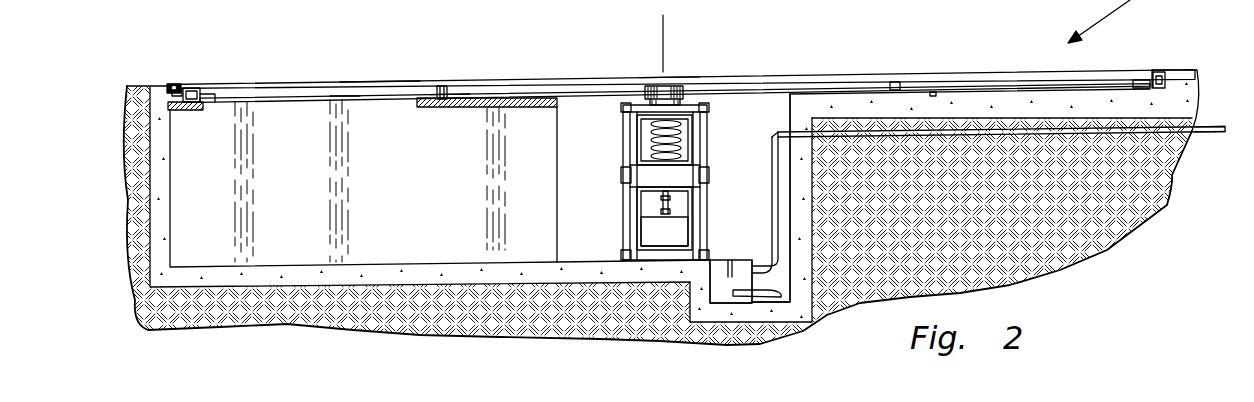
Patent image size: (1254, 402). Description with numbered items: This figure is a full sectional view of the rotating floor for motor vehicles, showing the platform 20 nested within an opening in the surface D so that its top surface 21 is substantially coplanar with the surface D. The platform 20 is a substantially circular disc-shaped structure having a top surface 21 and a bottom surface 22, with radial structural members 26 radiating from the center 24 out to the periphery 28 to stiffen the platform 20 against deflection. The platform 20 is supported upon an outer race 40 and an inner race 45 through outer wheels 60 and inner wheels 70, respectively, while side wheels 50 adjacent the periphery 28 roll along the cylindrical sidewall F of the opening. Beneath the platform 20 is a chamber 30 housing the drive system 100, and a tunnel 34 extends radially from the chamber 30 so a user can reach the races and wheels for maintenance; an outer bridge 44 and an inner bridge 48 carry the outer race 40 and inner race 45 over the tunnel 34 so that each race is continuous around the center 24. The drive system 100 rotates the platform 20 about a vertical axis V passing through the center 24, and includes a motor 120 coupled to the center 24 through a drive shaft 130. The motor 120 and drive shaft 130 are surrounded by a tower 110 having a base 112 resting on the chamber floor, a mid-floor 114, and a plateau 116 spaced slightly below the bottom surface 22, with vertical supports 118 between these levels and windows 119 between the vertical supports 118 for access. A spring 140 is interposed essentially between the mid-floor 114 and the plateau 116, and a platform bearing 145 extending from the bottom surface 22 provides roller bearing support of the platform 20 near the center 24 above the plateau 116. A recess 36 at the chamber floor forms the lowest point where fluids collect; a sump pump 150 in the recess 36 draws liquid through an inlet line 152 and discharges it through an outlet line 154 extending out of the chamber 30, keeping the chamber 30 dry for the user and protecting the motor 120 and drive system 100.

The platform 20 is at (326, 86).
The top surface 21 is at (349, 83).
The bottom surface 22 is at (243, 99).
The center 24 is at (664, 76).
The radial structural members 26 is at (341, 97).
The periphery 28 is at (177, 88).
The chamber 30 is at (751, 134).
The tunnel 34 is at (358, 201).
The recess 36 is at (782, 280).
The outer race 40 is at (202, 100).
The outer bridge 44 is at (181, 112).
The inner race 45 is at (451, 97).
The inner bridge 48 is at (428, 100).
The side wheels 50 is at (169, 86).
The outer wheels 60 is at (192, 98).
The inner wheels 70 is at (440, 90).
The drive system 100 is at (619, 179).
The tower 110 is at (628, 167).
The base 112 is at (632, 252).
The mid-floor 114 is at (630, 178).
The plateau 116 is at (623, 105).
The vertical supports 118 is at (703, 148).
The windows 119 is at (688, 211).
The motor 120 is at (640, 226).
The drive shaft 130 is at (670, 200).
The spring 140 is at (640, 132).
The platform bearing 145 is at (655, 87).
The sump pump 150 is at (723, 300).
The inlet line 152 is at (758, 298).
The outlet line 154 is at (1210, 132).
The surface D is at (1180, 71).
The earth E is at (1068, 264).
The cylindrical sidewall F is at (1165, 88).
The vertical axis V is at (661, 33).